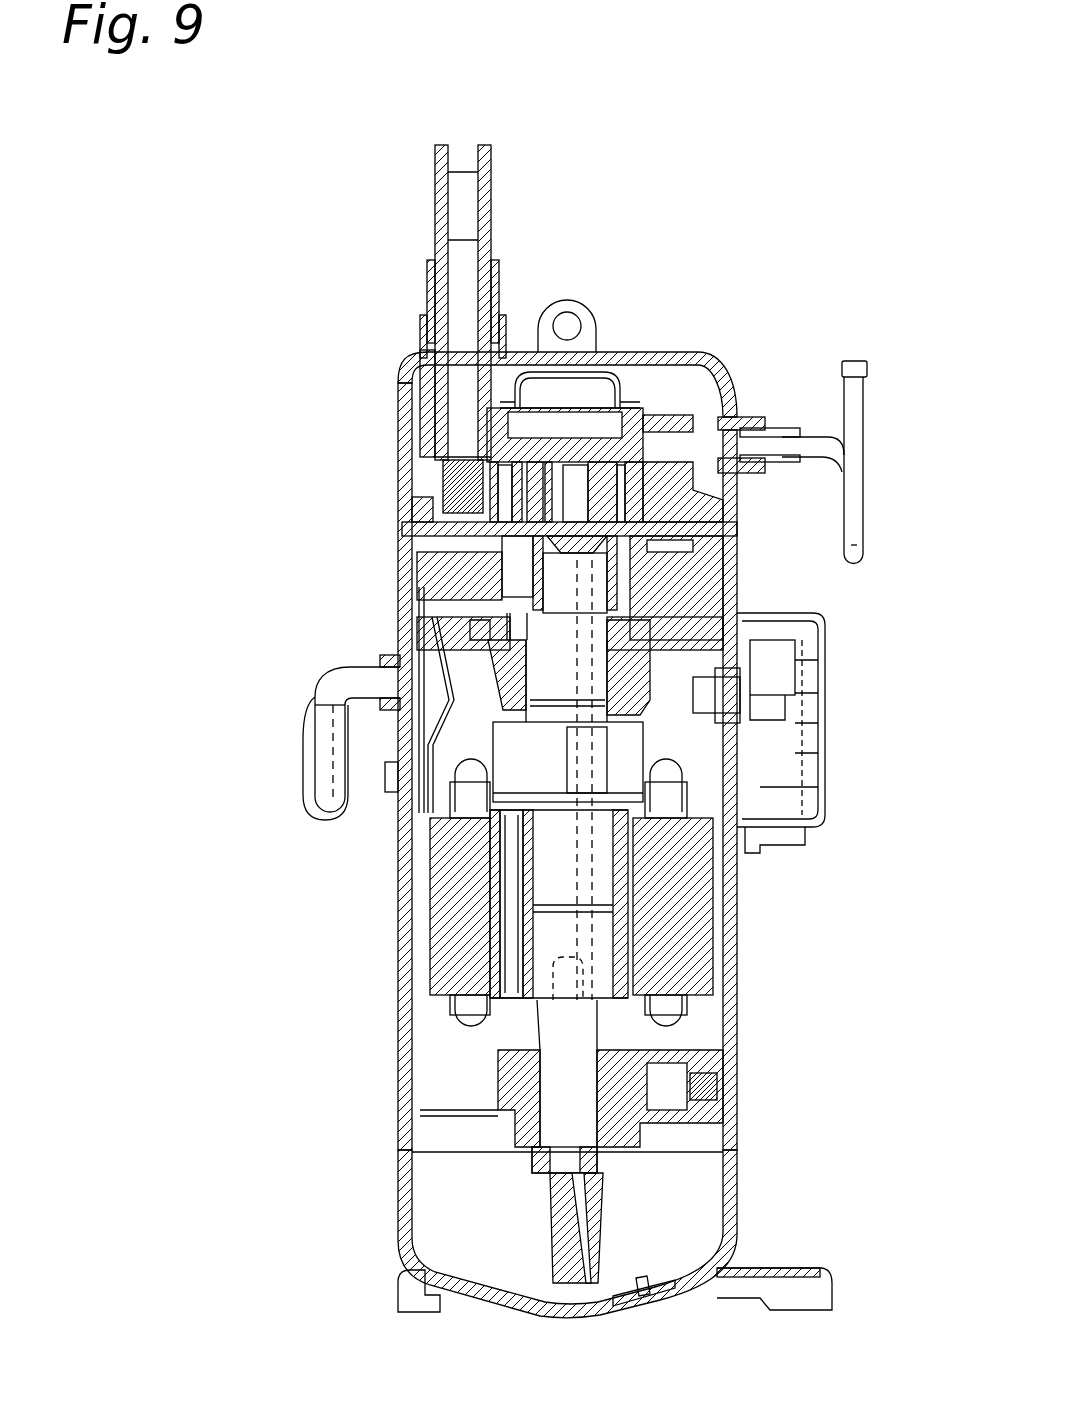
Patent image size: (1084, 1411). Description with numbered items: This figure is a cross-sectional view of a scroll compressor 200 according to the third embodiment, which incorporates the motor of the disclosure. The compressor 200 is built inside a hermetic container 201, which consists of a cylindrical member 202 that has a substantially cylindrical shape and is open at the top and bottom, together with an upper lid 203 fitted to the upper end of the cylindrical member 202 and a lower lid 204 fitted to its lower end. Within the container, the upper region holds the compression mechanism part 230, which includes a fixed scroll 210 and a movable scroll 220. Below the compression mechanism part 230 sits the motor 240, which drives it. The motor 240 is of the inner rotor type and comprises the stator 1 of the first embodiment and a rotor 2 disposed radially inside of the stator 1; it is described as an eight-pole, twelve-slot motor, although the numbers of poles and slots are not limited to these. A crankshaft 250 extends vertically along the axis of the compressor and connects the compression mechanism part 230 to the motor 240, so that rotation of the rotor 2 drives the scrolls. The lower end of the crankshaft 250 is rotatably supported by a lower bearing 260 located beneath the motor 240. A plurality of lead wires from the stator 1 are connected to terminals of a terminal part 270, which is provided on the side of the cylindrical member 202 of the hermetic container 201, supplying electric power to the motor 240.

The compressor 200 is at (733, 283).
The hermetic container 201 is at (745, 992).
The cylindrical member 202 is at (732, 940).
The upper lid 203 is at (396, 440).
The lower lid 204 is at (737, 1200).
The fixed scroll 210 is at (673, 418).
The movable scroll 220 is at (530, 522).
The compression mechanism part 230 is at (398, 484).
The motor 240 is at (272, 885).
The stator 1 is at (440, 907).
The rotor 2 is at (440, 942).
The crankshaft 250 is at (547, 1038).
The lower bearing 260 is at (517, 1093).
The terminal part 270 is at (703, 710).